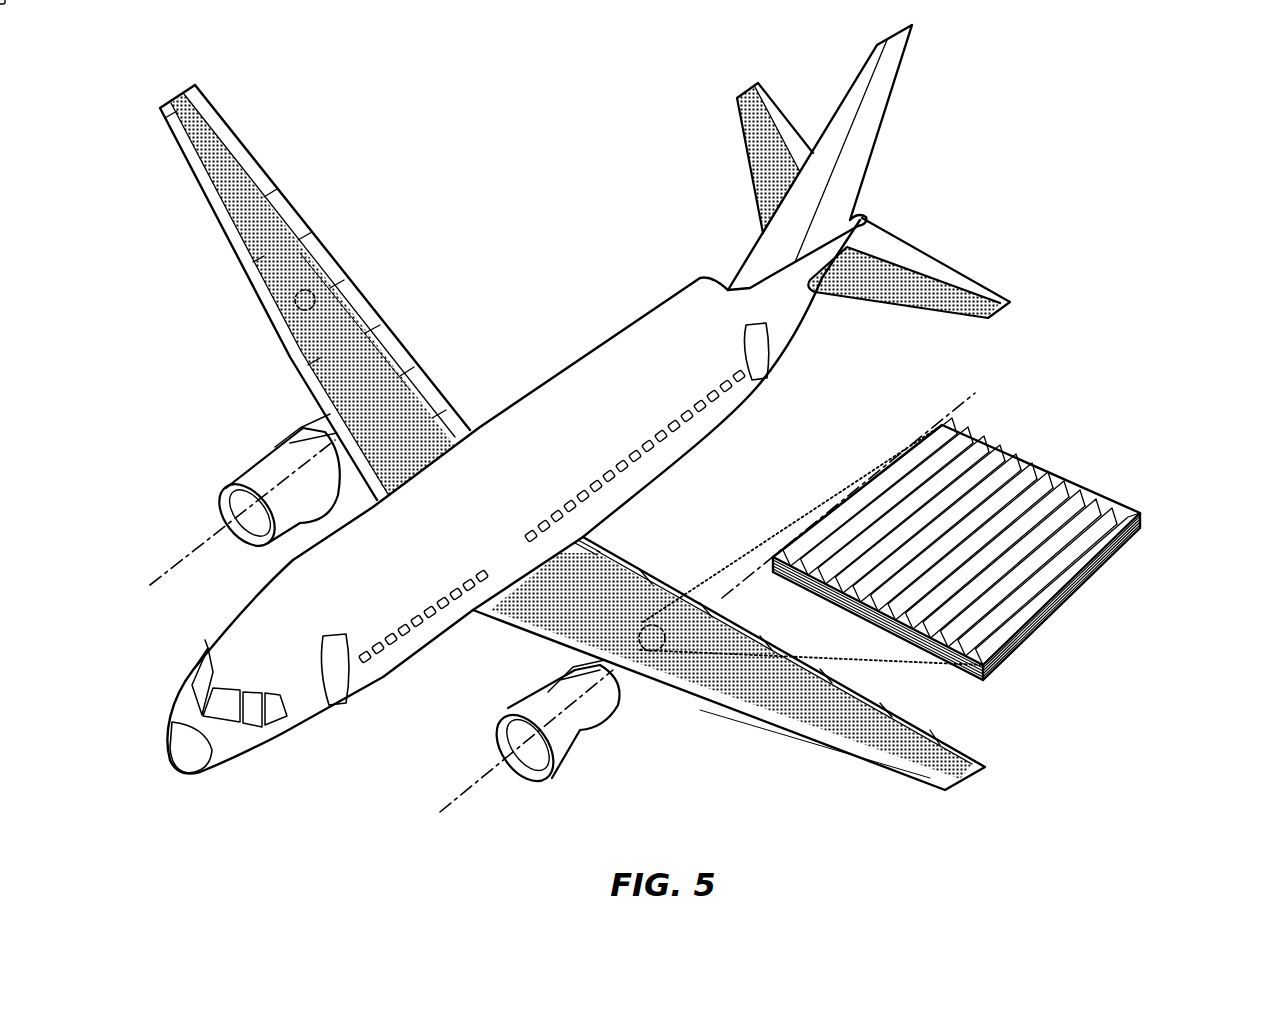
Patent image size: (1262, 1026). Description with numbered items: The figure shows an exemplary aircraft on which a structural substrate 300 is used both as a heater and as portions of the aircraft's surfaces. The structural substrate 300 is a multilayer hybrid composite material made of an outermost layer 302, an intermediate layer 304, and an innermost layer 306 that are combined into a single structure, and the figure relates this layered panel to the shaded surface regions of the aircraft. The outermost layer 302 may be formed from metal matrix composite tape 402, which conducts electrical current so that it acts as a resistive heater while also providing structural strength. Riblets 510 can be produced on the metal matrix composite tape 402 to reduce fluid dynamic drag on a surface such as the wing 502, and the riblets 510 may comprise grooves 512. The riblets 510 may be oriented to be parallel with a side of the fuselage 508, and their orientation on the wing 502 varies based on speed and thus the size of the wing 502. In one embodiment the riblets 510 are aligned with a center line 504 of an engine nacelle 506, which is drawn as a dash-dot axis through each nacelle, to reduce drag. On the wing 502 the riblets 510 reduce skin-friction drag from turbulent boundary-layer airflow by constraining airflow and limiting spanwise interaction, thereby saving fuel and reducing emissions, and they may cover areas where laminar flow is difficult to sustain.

The structural substrate 300 is at (232, 172).
The outermost layer 302 is at (993, 662).
The intermediate layer 304 is at (963, 660).
The innermost layer 306 is at (942, 655).
The metal matrix composite tape 402 is at (316, 292).
The wing 502 is at (230, 246).
The center line 504 is at (178, 547).
The engine nacelle 506 is at (258, 468).
The fuselage 508 is at (620, 358).
The riblets 510 is at (1103, 497).
The grooves 512 is at (947, 637).